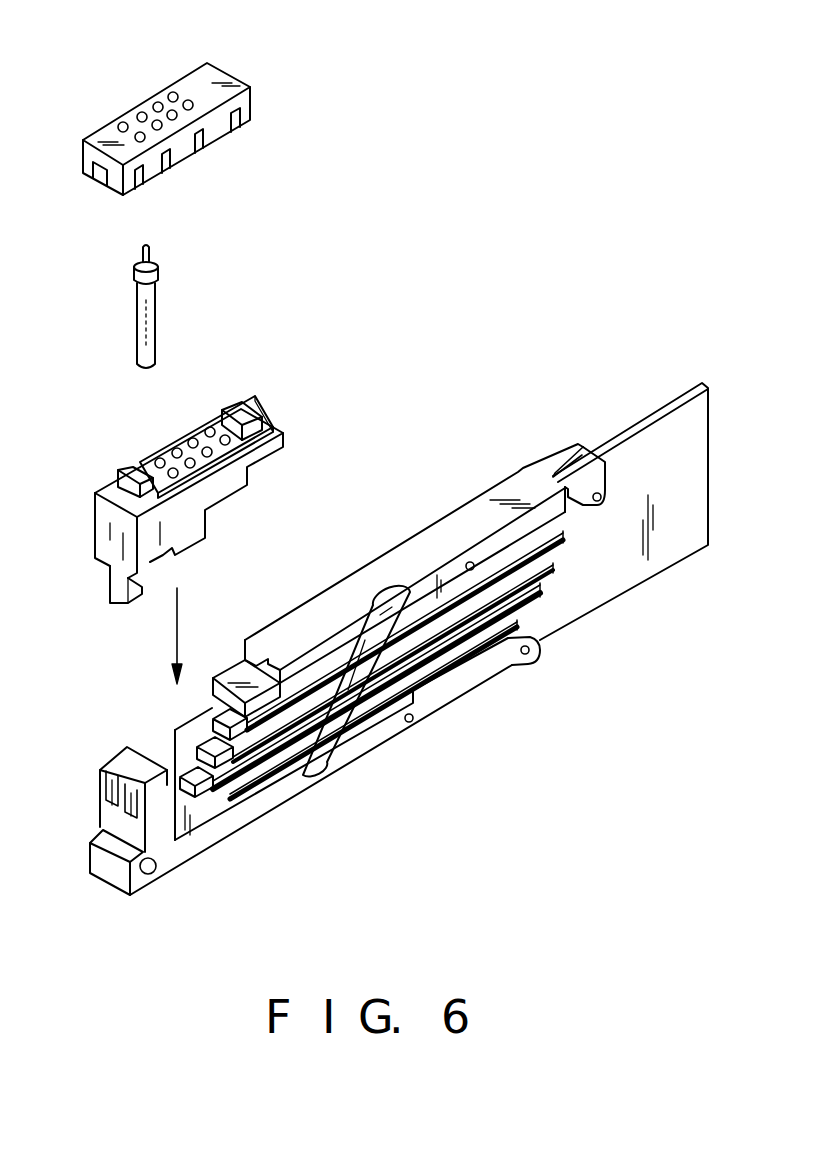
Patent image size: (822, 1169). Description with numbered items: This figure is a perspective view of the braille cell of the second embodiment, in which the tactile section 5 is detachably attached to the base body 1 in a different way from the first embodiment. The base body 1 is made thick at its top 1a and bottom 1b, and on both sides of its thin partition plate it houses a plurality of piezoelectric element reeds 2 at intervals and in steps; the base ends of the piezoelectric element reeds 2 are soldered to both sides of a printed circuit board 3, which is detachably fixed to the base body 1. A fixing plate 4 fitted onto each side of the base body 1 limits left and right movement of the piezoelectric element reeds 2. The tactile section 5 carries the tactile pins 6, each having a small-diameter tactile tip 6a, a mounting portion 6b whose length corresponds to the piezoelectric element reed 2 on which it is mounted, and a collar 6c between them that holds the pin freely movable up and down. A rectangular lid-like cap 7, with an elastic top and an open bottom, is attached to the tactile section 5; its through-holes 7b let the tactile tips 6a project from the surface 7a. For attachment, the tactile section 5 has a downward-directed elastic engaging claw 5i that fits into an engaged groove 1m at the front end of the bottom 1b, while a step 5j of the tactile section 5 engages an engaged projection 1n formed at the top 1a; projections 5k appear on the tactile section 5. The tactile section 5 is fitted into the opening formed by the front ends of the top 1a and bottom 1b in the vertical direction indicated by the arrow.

The base body 1 is at (515, 470).
The top 1a is at (448, 530).
The bottom 1b is at (223, 827).
The engaged groove 1m is at (102, 780).
The engaged projection 1n is at (260, 657).
The piezoelectric element reeds 2 is at (444, 665).
The printed circuit board 3 is at (693, 518).
The fixing plate 4 is at (340, 752).
The tactile section 5 is at (107, 523).
The engaging claw 5i is at (112, 588).
The step 5j is at (280, 438).
The projections on holder 5k is at (240, 403).
The tactile pins 6 is at (138, 315).
The tactile tip 6a is at (148, 248).
The mounting portion 6b is at (152, 327).
The collar 6c is at (157, 272).
The cap 7 is at (252, 102).
The surface 7a is at (203, 84).
The through-holes 7b is at (122, 120).